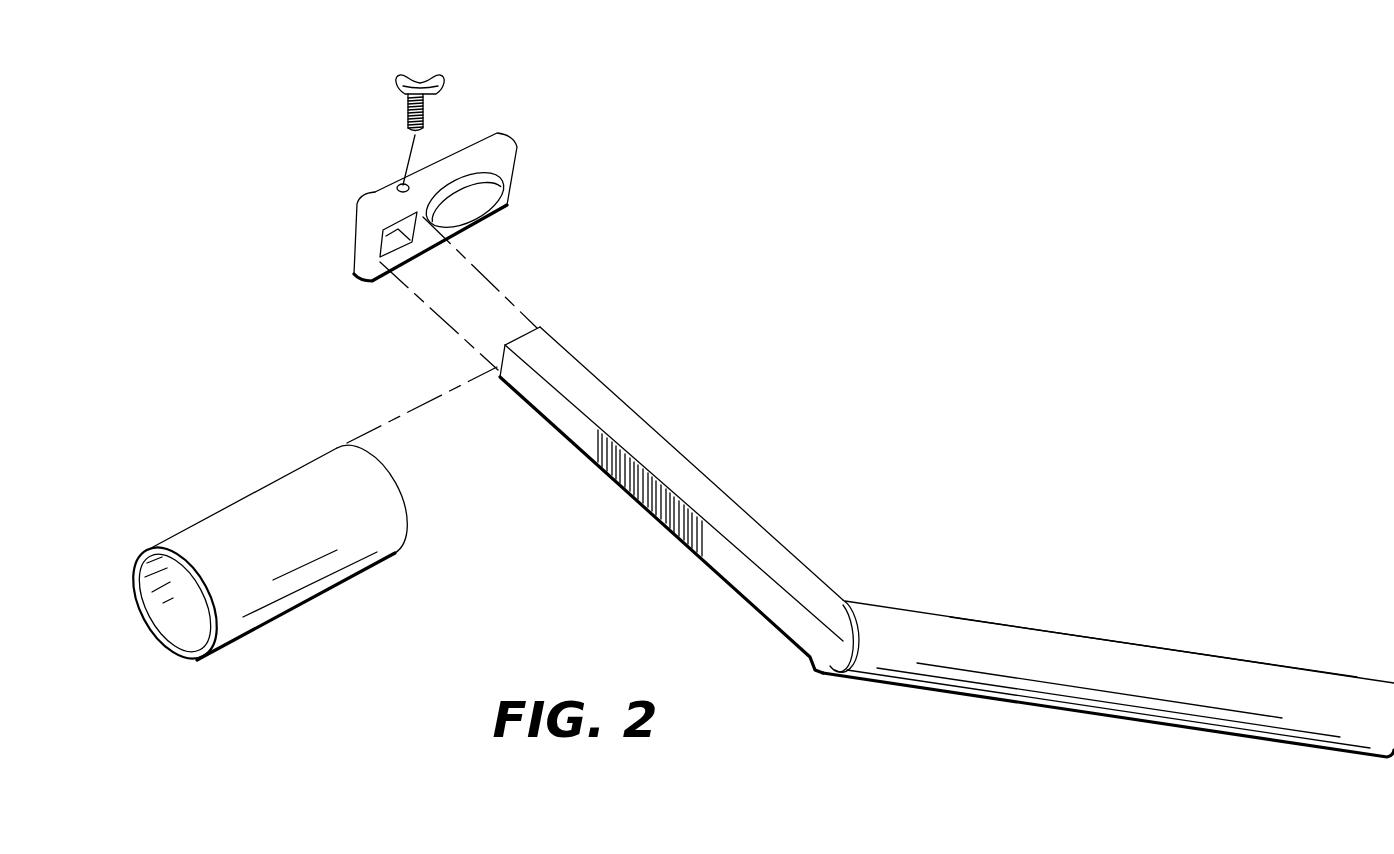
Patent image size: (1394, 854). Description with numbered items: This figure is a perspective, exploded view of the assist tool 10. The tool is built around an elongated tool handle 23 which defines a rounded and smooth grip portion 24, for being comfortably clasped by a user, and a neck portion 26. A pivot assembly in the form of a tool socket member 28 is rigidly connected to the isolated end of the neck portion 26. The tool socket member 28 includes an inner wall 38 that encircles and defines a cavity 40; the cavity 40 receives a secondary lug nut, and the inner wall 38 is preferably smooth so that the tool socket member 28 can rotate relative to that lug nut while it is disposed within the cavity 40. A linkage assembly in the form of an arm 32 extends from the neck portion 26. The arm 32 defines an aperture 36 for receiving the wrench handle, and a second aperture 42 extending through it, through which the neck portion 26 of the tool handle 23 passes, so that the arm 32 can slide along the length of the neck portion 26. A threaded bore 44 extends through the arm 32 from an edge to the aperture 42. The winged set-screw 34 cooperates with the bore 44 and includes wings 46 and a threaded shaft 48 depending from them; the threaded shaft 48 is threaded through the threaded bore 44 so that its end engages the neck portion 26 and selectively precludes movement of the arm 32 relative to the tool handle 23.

The assist tool 10 is at (792, 276).
The tool handle 23 is at (800, 551).
The grip portion 24 is at (1245, 657).
The neck portion 26 is at (676, 449).
The tool socket member 28 is at (236, 495).
The arm 32 is at (517, 133).
The winged set-screw 34 is at (395, 108).
The aperture 36 is at (469, 212).
The inner wall 38 is at (163, 600).
The cavity 40 is at (170, 632).
The second aperture 42 is at (406, 249).
The threaded bore 44 is at (399, 184).
The wings 46 is at (444, 60).
The threaded shaft 48 is at (427, 118).